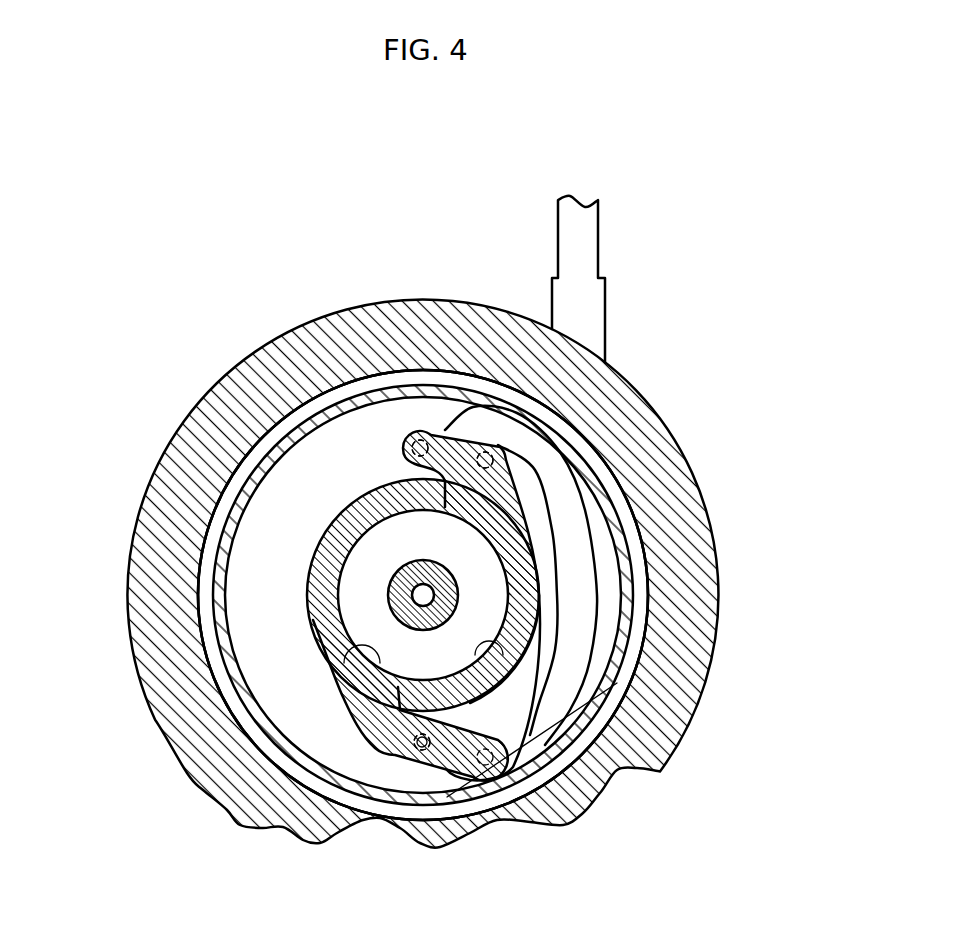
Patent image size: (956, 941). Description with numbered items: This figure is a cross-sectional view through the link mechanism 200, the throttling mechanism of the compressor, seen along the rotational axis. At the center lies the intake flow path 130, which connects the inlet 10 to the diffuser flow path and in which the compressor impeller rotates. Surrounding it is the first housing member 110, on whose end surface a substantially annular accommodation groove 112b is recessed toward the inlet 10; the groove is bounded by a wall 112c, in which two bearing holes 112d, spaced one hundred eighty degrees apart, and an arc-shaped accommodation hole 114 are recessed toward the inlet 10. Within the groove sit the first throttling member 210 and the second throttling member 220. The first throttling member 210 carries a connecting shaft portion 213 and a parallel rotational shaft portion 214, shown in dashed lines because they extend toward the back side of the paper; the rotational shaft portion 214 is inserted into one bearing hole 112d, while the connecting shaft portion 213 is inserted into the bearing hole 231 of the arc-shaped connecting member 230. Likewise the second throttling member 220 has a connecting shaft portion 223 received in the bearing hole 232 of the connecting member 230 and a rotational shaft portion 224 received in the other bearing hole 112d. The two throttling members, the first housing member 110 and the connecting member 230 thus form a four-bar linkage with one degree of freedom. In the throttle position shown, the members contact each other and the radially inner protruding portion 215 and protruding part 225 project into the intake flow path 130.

The link mechanism 200 is at (192, 229).
The first housing member 110 is at (405, 300).
The accommodation groove 112b is at (295, 581).
The wall 112c is at (295, 611).
The bearing hole 112d is at (405, 455).
The accommodation hole 114 is at (640, 540).
The intake flow path 130 is at (446, 548).
The inlet 10 is at (488, 567).
The first throttling member 210 is at (515, 476).
The connecting shaft portion 213 is at (492, 458).
The rotational shaft portion 214 is at (427, 440).
The protruding portion 215 is at (503, 640).
The second throttling member 220 is at (358, 710).
The connecting shaft portion 223 is at (492, 772).
The rotational shaft portion 224 is at (426, 752).
The protruding part 225 is at (360, 637).
The connecting member 230 is at (580, 605).
The bearing hole 231 is at (492, 452).
The bearing hole 232 is at (560, 812).